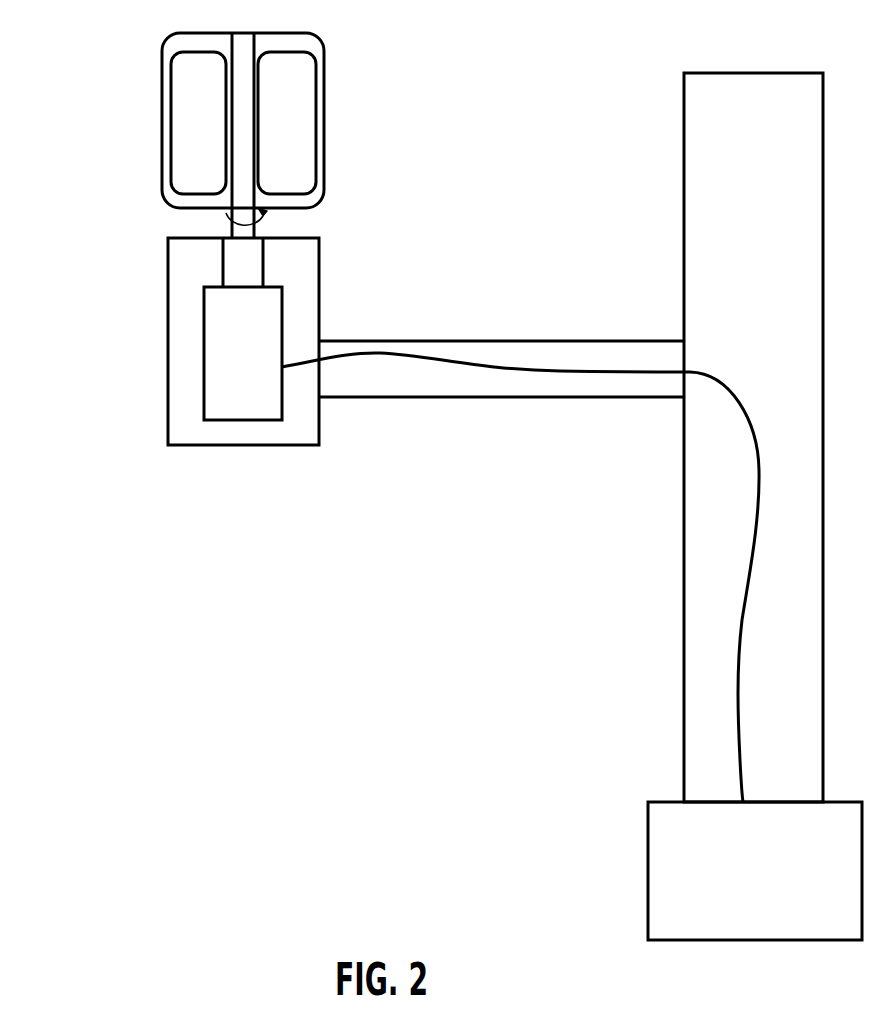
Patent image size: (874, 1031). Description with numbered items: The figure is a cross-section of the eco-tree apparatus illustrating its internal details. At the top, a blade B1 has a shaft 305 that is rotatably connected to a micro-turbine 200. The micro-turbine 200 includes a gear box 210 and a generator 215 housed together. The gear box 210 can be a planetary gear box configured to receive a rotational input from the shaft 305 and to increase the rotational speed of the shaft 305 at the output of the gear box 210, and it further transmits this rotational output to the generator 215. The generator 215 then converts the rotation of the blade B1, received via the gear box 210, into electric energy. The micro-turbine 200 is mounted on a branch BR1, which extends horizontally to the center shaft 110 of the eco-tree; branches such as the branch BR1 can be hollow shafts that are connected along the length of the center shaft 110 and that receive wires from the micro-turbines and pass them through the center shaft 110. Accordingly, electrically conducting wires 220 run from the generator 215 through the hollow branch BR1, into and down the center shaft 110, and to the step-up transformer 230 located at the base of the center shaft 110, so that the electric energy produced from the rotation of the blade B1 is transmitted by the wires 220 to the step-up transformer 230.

The blade B1 is at (168, 67).
The shaft 305 is at (230, 213).
The micro-turbine 200 is at (166, 398).
The gear box 210 is at (232, 265).
The generator 215 is at (220, 372).
The branch BR1 is at (412, 398).
The electrically conducting wires 220 is at (587, 372).
The center shaft 110 is at (684, 622).
The step-up transformer 230 is at (648, 870).